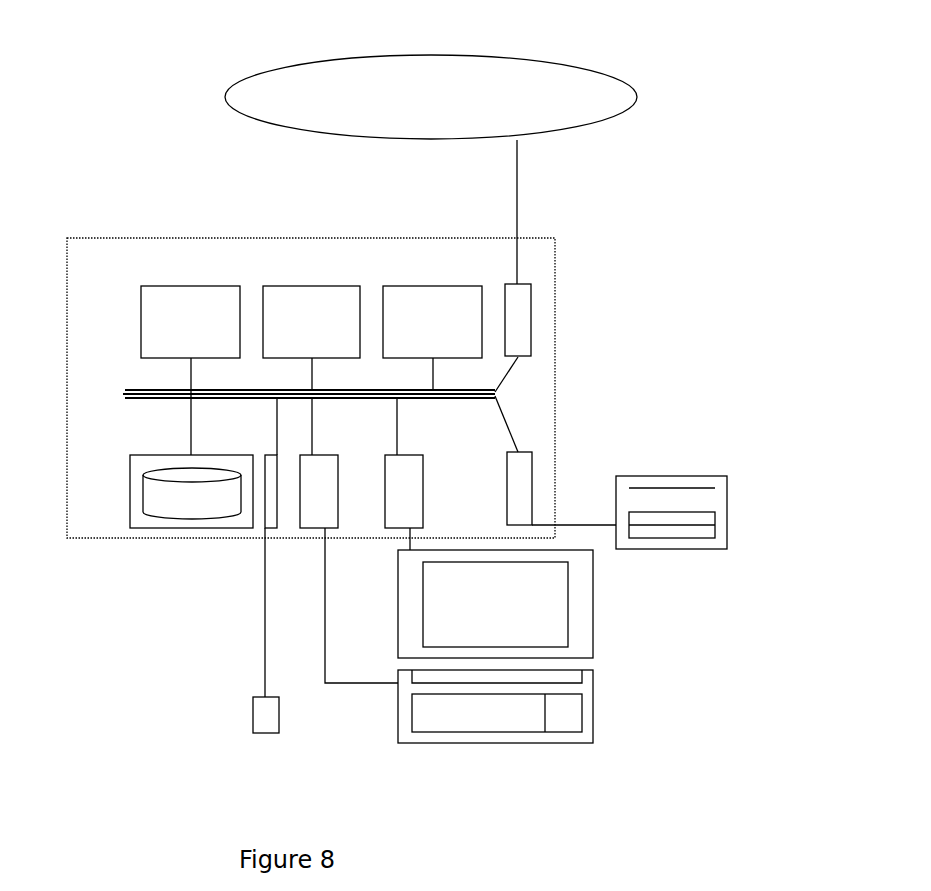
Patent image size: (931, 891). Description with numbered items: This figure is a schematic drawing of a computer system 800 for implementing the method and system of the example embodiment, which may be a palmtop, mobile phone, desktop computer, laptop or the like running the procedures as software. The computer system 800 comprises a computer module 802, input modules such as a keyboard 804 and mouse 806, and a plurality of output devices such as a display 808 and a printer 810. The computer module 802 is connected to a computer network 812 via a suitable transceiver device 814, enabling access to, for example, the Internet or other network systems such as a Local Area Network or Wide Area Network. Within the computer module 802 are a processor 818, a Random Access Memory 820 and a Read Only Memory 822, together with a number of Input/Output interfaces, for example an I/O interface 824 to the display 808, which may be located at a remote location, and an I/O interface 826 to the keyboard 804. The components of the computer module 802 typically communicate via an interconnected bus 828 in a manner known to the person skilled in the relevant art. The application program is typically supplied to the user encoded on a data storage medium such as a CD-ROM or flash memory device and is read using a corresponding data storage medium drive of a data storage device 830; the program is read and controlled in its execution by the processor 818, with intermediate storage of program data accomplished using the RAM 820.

The computer system 800 is at (114, 786).
The computer module 802 is at (555, 367).
The keyboard 804 is at (510, 742).
The mouse 806 is at (267, 735).
The display 808 is at (595, 647).
The printer 810 is at (625, 477).
The computer network 812 is at (528, 55).
The transceiver device 814 is at (531, 307).
The processor 818 is at (400, 285).
The Random Access Memory (RAM) 820 is at (170, 285).
The Read Only Memory (ROM) 822 is at (290, 285).
The I/O interface 824 is at (372, 530).
The I/O interface 826 is at (307, 530).
The interconnected bus 828 is at (128, 393).
The data storage device 830 is at (138, 530).